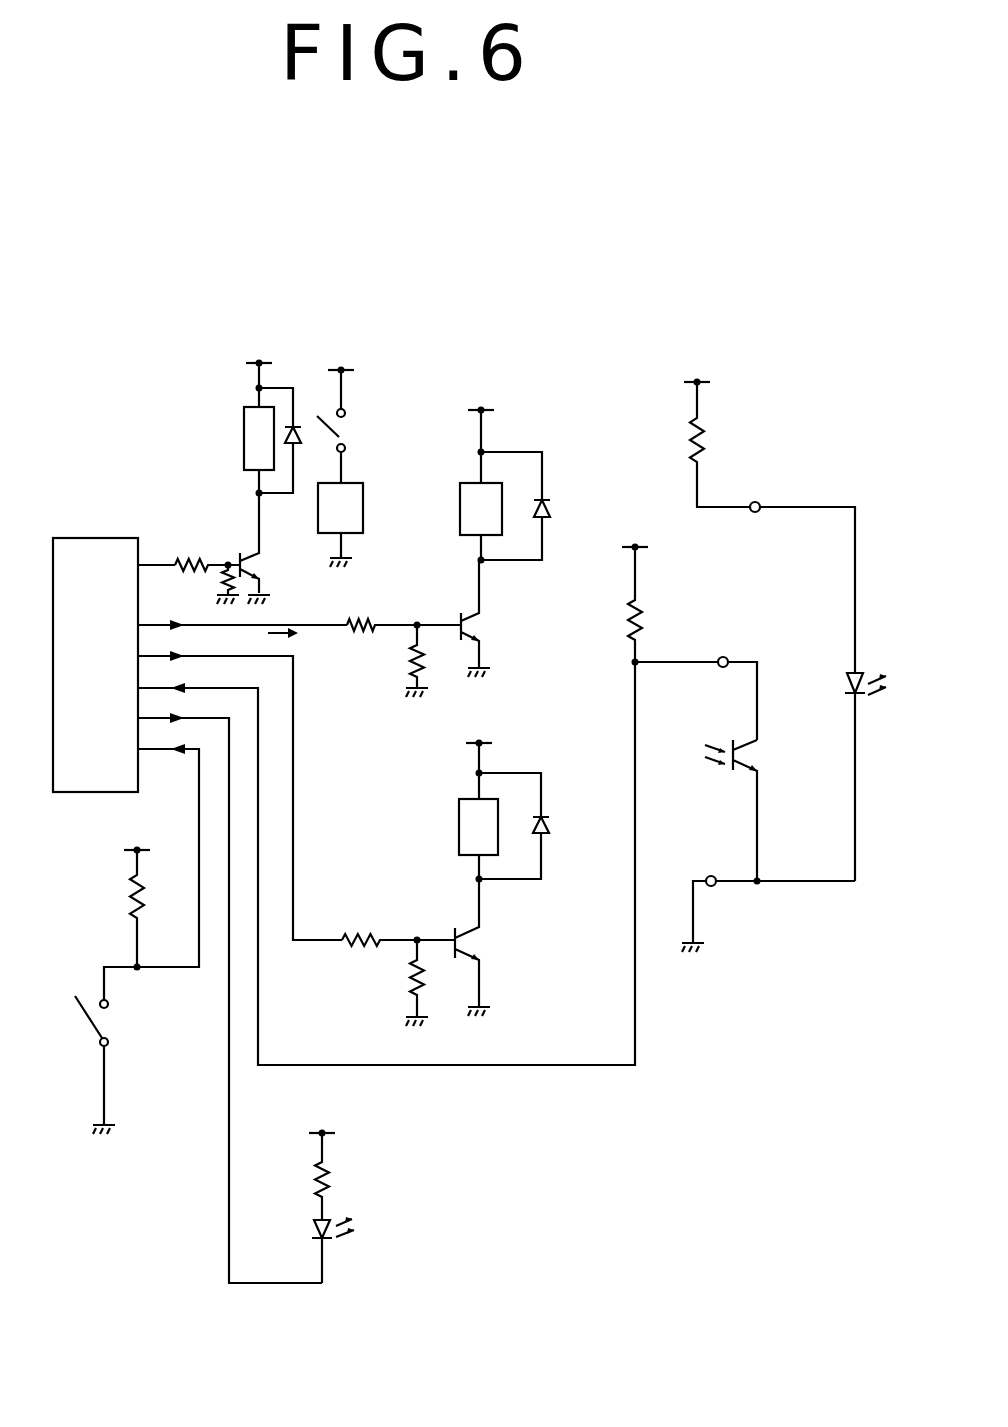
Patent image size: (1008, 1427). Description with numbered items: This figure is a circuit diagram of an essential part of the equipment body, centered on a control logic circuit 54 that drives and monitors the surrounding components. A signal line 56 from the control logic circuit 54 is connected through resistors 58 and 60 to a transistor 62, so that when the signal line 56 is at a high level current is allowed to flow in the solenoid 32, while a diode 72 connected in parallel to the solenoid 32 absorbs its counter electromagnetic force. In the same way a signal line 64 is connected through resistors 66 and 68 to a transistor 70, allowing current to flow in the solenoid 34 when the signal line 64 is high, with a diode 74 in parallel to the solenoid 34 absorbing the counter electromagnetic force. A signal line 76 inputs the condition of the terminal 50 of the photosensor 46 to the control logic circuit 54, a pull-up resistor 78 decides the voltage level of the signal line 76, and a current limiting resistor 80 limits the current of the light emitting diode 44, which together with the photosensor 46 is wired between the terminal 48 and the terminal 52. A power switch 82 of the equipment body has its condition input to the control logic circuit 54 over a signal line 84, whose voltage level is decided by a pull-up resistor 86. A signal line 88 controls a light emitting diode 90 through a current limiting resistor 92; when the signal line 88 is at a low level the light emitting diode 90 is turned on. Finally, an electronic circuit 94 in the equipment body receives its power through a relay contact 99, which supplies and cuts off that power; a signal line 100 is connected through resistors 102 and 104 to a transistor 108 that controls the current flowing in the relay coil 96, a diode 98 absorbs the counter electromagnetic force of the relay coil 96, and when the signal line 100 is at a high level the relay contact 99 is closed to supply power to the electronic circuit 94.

The solenoid 32 is at (460, 506).
The solenoid 34 is at (458, 833).
The light emitting diode 44 is at (847, 671).
The photosensor 46 is at (755, 752).
The terminal 48 is at (757, 501).
The terminal 50 is at (723, 658).
The terminal 52 is at (711, 877).
The control logic circuit 54 is at (95, 537).
The signal line 56 is at (314, 630).
The resistor 58 is at (363, 621).
The resistor 60 is at (411, 663).
The transistor 62 is at (478, 627).
The signal line 64 is at (294, 802).
The resistor 66 is at (363, 927).
The resistor 68 is at (405, 978).
The transistor 70 is at (475, 943).
The diode 72 is at (547, 512).
The diode 74 is at (546, 829).
The signal line 76 is at (483, 1068).
The pull-up resistor 78 is at (644, 619).
The current limiting resistor 80 is at (706, 434).
The power switch 82 is at (108, 1023).
The signal line 84 is at (115, 966).
The pull-up resistor 86 is at (130, 888).
The signal line 88 is at (272, 1285).
The light emitting diode 90 is at (332, 1243).
The current limiting resistor 92 is at (335, 1173).
The electronic circuit 94 is at (365, 523).
The relay coil 96 is at (243, 439).
The diode 98 is at (309, 430).
The relay contact 99 is at (340, 437).
The signal line 100 is at (155, 562).
The resistor 102 is at (178, 555).
The resistor 104 is at (221, 580).
The transistor 108 is at (258, 564).